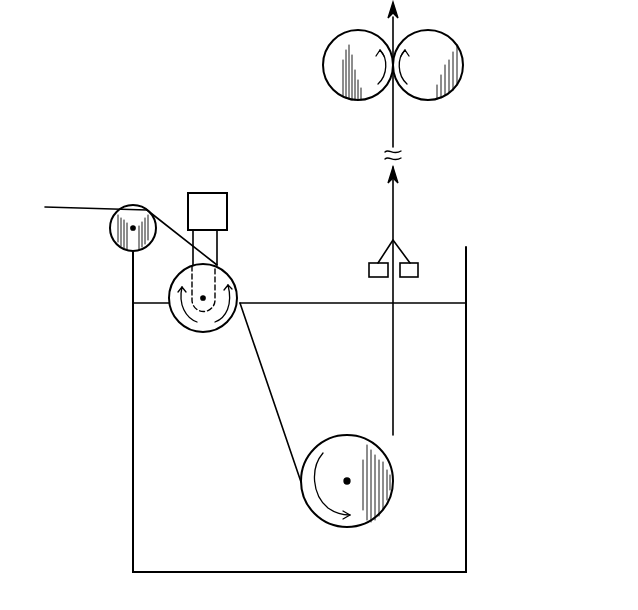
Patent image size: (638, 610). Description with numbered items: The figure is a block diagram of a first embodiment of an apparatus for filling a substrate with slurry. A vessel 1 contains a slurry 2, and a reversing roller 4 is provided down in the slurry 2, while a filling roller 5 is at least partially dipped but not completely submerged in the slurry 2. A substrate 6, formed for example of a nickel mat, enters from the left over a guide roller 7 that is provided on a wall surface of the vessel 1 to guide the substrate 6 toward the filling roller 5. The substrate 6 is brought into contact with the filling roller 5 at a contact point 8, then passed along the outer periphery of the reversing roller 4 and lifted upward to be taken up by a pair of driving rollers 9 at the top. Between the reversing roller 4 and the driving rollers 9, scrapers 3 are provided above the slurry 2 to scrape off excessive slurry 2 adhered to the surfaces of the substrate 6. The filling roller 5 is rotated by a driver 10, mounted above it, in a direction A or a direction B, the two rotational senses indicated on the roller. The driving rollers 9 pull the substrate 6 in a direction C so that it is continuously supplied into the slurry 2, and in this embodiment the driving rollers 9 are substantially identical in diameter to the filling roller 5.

The vessel 1 is at (469, 340).
The slurry 2 is at (447, 418).
The scrapers 3 is at (400, 247).
The reversing roller 4 is at (342, 448).
The filling roller 5 is at (233, 290).
The substrate 6 is at (185, 240).
The guide roller 7 is at (132, 214).
The contact point 8 is at (220, 265).
The driving rollers 9 is at (323, 70).
The driver 10 is at (227, 192).
The direction A is at (183, 312).
The direction B is at (217, 317).
The direction C is at (396, 197).